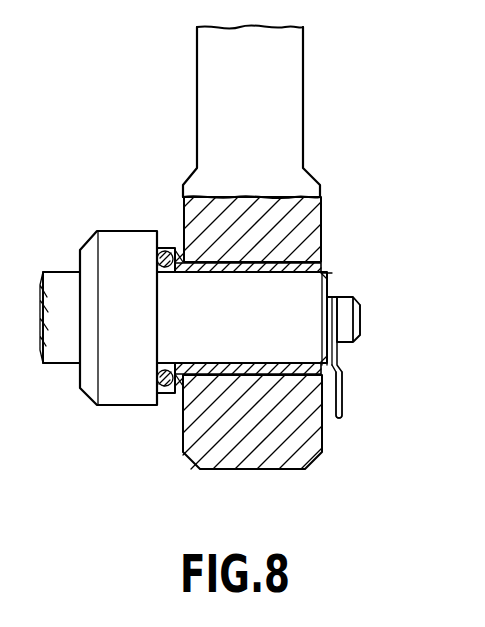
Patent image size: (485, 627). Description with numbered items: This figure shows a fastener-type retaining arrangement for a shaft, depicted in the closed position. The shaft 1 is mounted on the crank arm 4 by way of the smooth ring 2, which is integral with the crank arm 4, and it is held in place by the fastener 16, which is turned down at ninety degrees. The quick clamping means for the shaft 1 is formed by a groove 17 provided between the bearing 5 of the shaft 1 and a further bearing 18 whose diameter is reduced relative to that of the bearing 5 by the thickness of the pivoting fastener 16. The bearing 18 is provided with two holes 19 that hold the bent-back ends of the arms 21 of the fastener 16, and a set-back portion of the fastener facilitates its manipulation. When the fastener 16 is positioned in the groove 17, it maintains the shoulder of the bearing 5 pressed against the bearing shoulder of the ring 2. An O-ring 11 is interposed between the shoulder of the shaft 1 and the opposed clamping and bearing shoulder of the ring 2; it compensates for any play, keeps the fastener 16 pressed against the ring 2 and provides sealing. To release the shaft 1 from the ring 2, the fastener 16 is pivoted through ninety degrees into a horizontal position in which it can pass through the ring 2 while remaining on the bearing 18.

The shaft 1 is at (63, 292).
The smooth ring 2 is at (228, 262).
The crank arm 4 is at (282, 137).
The bearing 5 is at (255, 345).
The O-ring 11 is at (170, 395).
The fastener 16 is at (343, 403).
The groove 17 is at (334, 298).
The bearing 18 is at (365, 305).
The holes 19 is at (352, 297).
The arms 21 is at (345, 365).